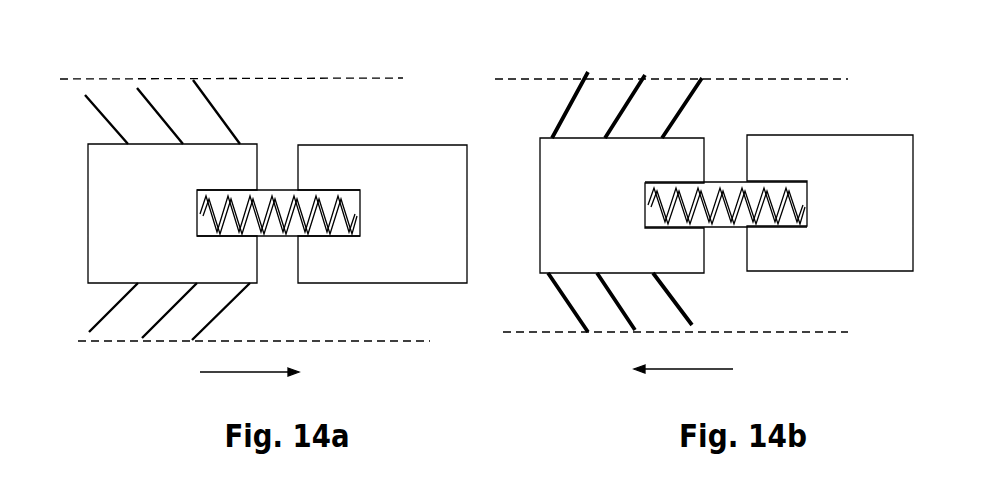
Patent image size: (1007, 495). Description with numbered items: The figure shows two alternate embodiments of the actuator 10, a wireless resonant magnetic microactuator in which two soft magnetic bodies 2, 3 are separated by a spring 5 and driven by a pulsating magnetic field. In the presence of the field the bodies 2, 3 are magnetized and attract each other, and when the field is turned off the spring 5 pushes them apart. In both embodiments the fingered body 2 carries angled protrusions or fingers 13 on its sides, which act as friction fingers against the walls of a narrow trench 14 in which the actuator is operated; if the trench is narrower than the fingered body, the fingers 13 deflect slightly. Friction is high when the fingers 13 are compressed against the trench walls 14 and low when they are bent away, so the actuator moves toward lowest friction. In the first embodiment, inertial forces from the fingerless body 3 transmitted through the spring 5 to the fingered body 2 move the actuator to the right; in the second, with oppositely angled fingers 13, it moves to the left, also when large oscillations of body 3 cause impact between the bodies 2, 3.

In FIG. 14A, the soft magnetic body 2 is at (115, 210).
In FIG. 14B, the soft magnetic body 2 is at (557, 213).
In FIG. 14A, the soft magnetic body 3 is at (360, 150).
In FIG. 14B, the soft magnetic body 3 is at (851, 155).
In FIG. 14A, the spring 5 is at (278, 195).
In FIG. 14B, the spring 5 is at (727, 190).
In FIG. 14A, the actuator 10 is at (301, 92).
In FIG. 14A, the angled protrusions (fingers) 13 is at (228, 304).
In FIG. 14A, the trench 14 is at (113, 76).
In FIG. 14B, the trench 14 is at (675, 73).